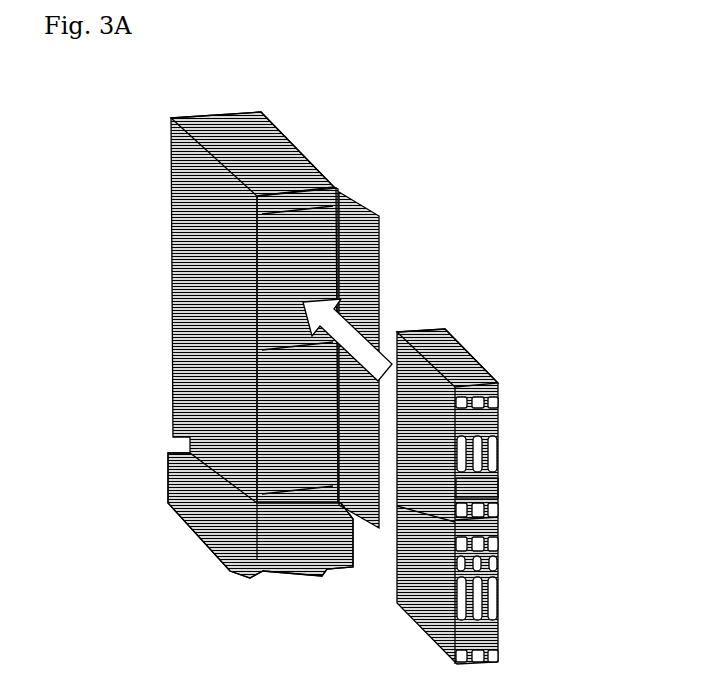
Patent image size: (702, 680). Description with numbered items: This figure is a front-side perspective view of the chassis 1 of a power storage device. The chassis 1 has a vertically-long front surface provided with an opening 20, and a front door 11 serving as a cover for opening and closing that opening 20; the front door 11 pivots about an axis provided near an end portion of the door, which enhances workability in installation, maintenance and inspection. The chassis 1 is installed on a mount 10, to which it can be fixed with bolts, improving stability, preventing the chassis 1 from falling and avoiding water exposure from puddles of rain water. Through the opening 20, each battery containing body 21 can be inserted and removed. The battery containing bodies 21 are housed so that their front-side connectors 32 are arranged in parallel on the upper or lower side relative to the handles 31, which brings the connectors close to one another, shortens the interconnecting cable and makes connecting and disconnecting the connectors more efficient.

The chassis 1 is at (277, 321).
The mount 10 is at (228, 515).
The front door 11 is at (401, 353).
The opening 20 is at (339, 304).
The battery containing body 21 is at (492, 496).
The handle 31 is at (522, 441).
The front-side connector 32 is at (521, 473).